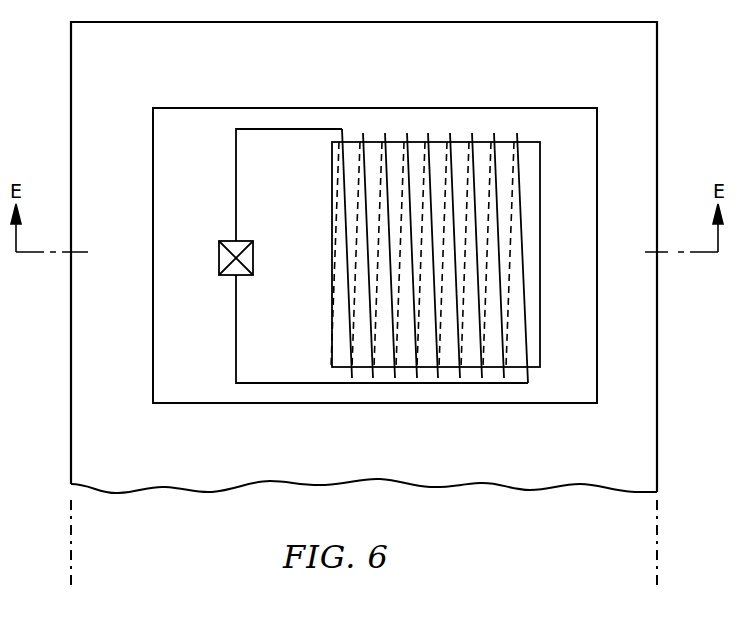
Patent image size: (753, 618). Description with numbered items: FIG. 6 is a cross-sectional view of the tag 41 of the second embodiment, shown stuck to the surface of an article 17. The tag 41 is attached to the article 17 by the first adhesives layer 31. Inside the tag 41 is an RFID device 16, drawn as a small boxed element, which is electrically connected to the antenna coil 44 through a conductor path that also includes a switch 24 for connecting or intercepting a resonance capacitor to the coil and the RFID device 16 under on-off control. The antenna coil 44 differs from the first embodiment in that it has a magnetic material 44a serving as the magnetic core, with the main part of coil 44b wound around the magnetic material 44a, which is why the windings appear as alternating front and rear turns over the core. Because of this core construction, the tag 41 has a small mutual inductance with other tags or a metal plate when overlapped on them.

The article 17 is at (657, 70).
The tag 41 is at (597, 165).
The first adhesives layer 31 is at (597, 348).
The switch 24 is at (290, 129).
The RFID device 16 is at (222, 276).
The antenna coil 44 is at (402, 303).
The magnetic material 44a is at (331, 357).
The main part of coil 44b is at (396, 355).